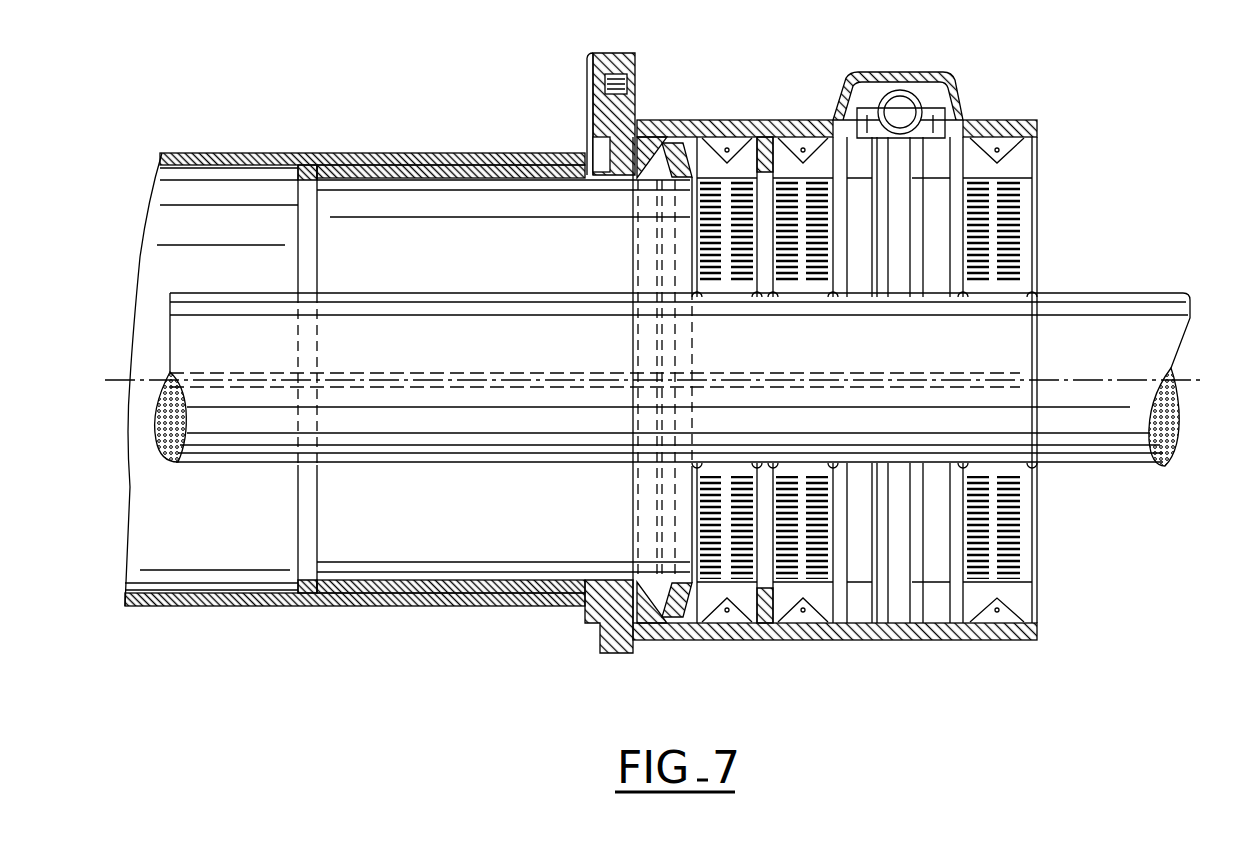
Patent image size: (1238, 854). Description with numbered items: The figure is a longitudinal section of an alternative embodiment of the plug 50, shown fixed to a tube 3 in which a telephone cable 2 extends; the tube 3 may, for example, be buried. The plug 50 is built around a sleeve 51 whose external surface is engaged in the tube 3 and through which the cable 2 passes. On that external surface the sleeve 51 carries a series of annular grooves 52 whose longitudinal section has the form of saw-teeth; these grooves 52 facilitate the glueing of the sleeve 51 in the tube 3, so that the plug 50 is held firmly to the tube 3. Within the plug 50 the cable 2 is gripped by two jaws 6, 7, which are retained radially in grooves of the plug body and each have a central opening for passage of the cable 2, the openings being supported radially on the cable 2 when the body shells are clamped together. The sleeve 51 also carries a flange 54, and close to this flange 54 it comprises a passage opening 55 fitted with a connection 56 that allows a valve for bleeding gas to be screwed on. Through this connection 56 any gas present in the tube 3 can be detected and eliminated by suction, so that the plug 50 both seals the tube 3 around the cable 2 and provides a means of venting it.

The cable 2 is at (488, 313).
The tube 3 is at (305, 152).
The jaw 6 is at (833, 238).
The jaw 7 is at (977, 243).
The plug 50 is at (786, 104).
The sleeve 51 is at (527, 178).
The annular grooves 52 is at (467, 153).
The flange 54 is at (607, 637).
The passage opening 55 is at (596, 137).
The connection 56 is at (628, 87).